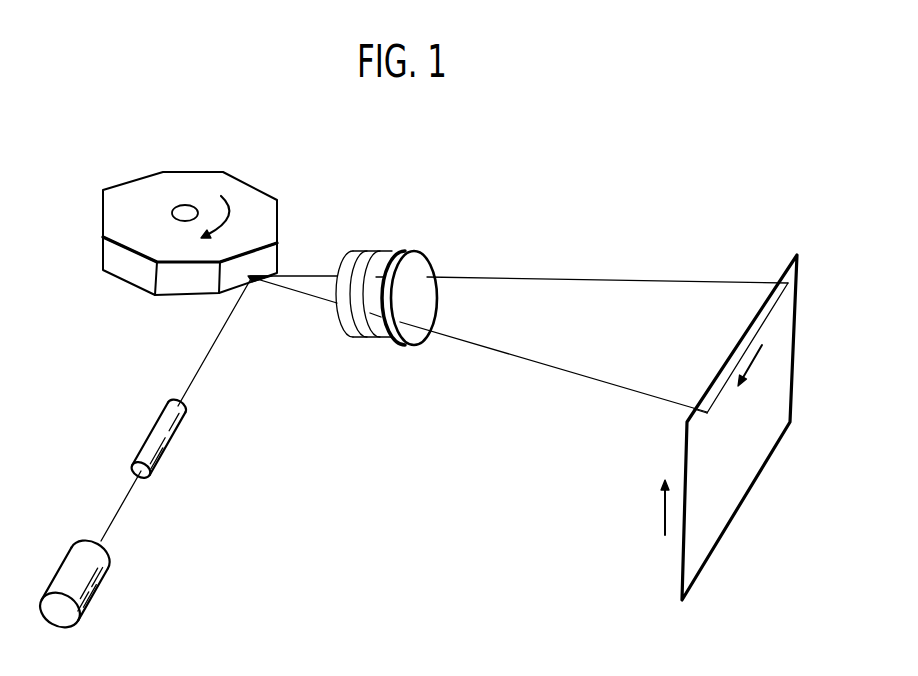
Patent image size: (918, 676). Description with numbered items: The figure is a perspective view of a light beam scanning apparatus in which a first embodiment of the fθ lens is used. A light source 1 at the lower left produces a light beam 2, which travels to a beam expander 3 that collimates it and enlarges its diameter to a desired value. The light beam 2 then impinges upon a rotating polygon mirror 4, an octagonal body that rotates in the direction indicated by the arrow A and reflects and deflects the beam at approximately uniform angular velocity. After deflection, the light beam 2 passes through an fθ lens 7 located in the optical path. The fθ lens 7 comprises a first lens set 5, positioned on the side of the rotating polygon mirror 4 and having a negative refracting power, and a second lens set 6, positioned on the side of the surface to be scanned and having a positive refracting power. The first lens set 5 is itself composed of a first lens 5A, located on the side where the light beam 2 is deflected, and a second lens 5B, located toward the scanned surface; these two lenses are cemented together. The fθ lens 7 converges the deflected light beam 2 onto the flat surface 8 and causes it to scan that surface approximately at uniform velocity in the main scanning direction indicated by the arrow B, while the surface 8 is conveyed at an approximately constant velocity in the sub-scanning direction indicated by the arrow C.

The light source 1 is at (87, 610).
The light beam 2 is at (102, 534).
The beam expander 3 is at (166, 459).
The rotating polygon mirror 4 is at (258, 190).
The first lens set 5 is at (385, 271).
The first lens 5A is at (365, 252).
The second lens 5B is at (390, 253).
The second lens set 6 is at (438, 269).
The fθ lens 7 is at (422, 275).
The surface 8 is at (793, 343).